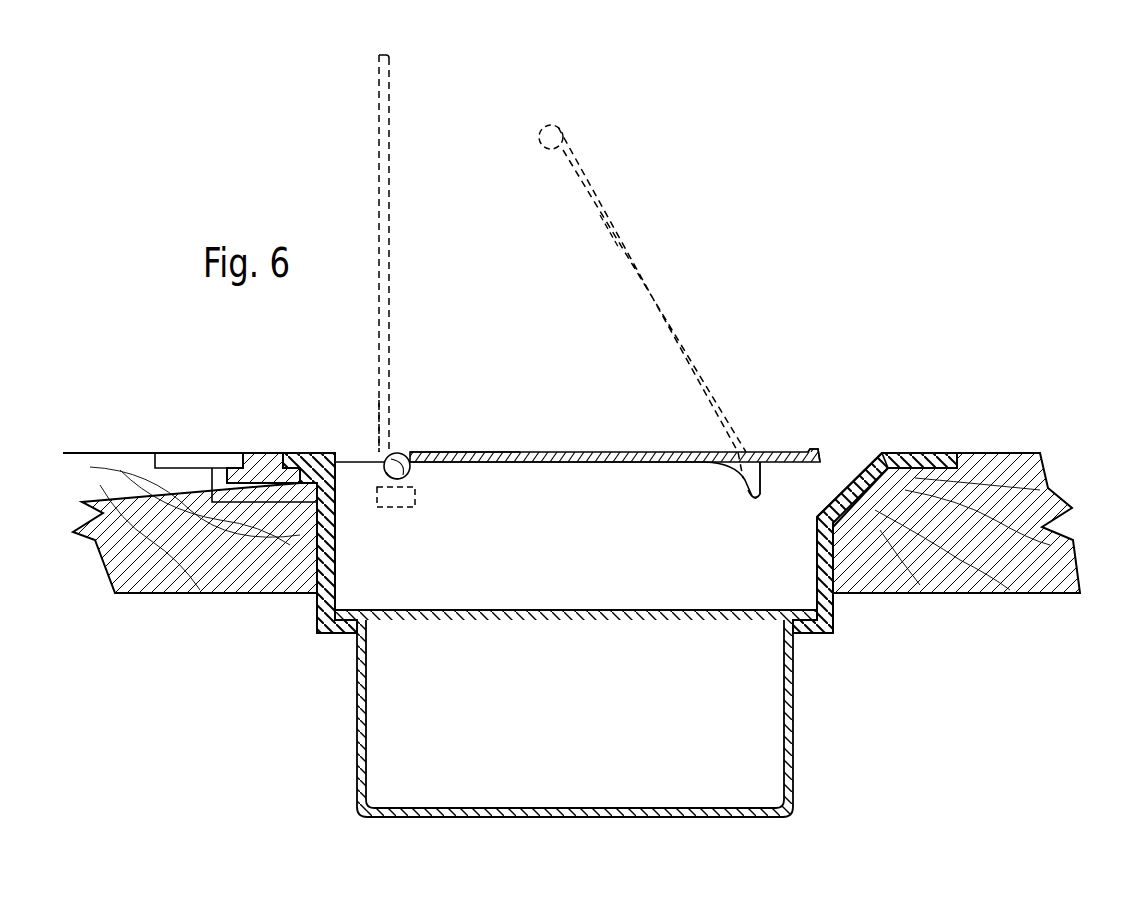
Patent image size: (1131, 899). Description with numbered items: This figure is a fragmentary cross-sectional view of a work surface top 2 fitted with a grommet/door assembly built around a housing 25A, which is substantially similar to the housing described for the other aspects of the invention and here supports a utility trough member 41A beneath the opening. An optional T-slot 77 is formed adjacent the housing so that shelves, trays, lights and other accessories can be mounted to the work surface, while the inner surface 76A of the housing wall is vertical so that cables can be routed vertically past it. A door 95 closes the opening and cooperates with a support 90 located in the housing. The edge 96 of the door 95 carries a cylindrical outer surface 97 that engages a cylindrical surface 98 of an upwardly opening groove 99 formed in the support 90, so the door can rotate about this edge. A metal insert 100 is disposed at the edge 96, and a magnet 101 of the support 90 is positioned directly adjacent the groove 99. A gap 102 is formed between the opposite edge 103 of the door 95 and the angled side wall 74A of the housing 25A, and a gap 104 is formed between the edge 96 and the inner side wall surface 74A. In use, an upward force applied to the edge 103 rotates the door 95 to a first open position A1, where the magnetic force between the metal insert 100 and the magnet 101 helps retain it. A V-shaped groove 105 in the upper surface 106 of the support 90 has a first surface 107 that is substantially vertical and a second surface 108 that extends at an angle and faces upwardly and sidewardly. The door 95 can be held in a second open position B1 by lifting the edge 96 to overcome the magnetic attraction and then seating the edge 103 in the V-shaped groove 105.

The work surface top 2 is at (1062, 453).
The housing 25A is at (316, 624).
The utility trough member 41A is at (357, 778).
The angled side wall 74A is at (890, 463).
The inner surface 76A is at (335, 493).
The T-slot 77 is at (263, 460).
The support 90 is at (852, 471).
The door 95 is at (512, 452).
The edge 96 is at (399, 446).
The cylindrical outer surface 97 is at (380, 453).
The cylindrical surface 98 is at (385, 477).
The upwardly opening groove 99 is at (397, 467).
The metal insert 100 is at (397, 455).
The magnet 101 is at (415, 505).
The gap 102 is at (808, 480).
The edge 103 is at (389, 58).
The gap 104 is at (374, 408).
The V-shaped groove 105 is at (751, 433).
The upper surface 106 is at (638, 462).
The first surface 107 is at (753, 477).
The second surface 108 is at (743, 477).
The first open position A1 is at (390, 135).
The second open position B1 is at (607, 198).